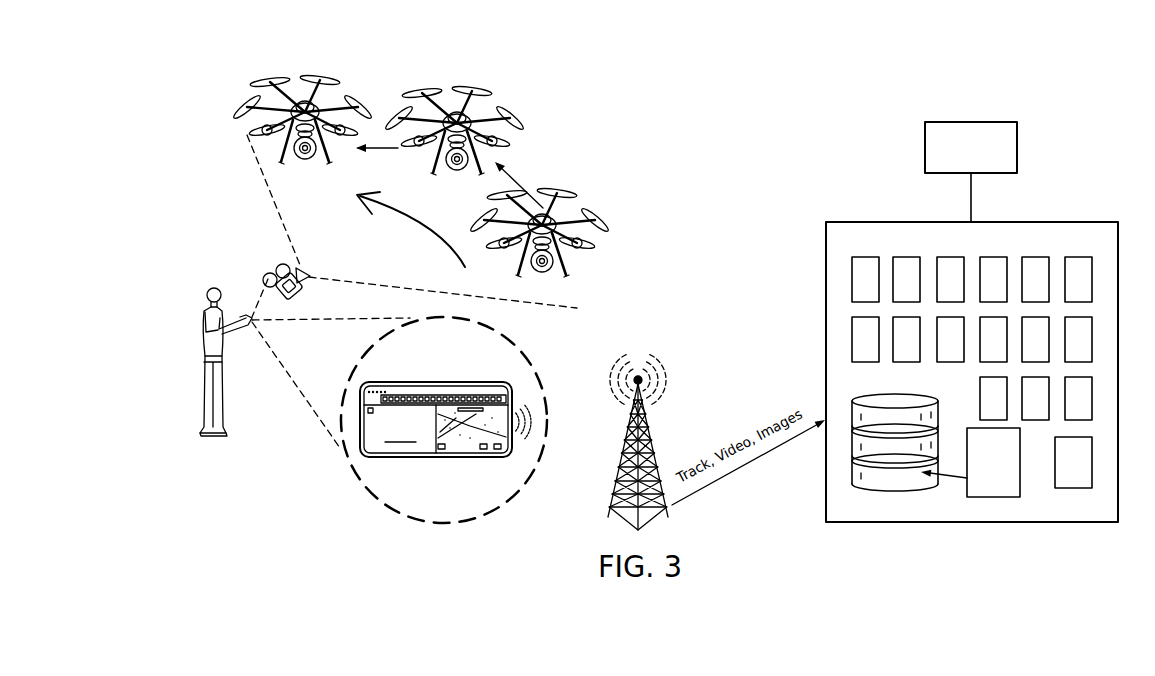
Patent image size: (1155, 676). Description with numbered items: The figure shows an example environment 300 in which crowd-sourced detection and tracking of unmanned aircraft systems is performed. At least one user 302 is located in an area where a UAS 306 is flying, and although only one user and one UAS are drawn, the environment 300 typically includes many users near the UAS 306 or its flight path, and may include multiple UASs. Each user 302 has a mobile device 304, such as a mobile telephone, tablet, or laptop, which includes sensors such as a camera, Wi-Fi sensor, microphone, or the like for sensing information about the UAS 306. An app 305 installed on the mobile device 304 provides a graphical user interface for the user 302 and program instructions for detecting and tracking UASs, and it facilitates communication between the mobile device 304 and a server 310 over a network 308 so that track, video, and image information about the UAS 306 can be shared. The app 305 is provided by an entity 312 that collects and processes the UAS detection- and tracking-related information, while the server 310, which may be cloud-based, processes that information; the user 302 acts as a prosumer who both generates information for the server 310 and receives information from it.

The environment 300 is at (727, 94).
The user 302 is at (213, 285).
The mobile device 304 is at (440, 383).
The app 305 is at (392, 425).
The UAS 306 is at (271, 80).
The network 308 is at (622, 448).
The server 310 is at (980, 523).
The entity 312 is at (1019, 147).